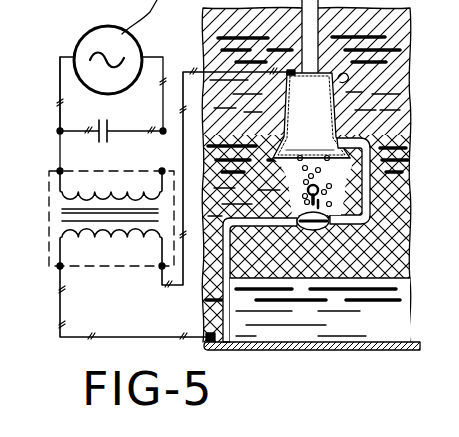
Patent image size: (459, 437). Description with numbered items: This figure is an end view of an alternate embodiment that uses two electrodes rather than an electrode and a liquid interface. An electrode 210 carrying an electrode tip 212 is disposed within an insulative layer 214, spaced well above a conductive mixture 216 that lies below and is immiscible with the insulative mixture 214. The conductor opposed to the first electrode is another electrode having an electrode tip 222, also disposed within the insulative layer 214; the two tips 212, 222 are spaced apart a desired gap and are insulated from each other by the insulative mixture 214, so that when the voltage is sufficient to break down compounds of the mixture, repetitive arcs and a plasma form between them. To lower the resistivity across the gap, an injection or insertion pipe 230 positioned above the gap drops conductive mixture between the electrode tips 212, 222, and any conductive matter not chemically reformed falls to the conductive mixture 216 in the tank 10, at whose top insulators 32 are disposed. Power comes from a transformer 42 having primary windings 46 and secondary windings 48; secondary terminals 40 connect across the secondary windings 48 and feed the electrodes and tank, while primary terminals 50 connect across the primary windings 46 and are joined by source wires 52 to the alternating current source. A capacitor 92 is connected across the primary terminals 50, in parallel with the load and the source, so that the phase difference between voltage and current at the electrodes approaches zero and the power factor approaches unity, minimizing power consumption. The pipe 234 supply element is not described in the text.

The tank 10 is at (298, 350).
The insulators 32 is at (352, 72).
The secondary terminals 40 is at (163, 276).
The transformer 42 is at (95, 206).
The primary windings 46 is at (138, 193).
The secondary windings 48 is at (100, 234).
The primary terminals 50 is at (60, 165).
The source wires 52 is at (60, 100).
The capacitor 92 is at (114, 127).
The electrode 210 is at (368, 190).
The electrode tip 212 is at (326, 240).
The insulative layer 214 is at (372, 237).
The conductive mixture 216 is at (408, 320).
The electrode tip 222 is at (306, 242).
The injection or insertion pipe 230 is at (322, 138).
The supply pipe 234 is at (318, 22).